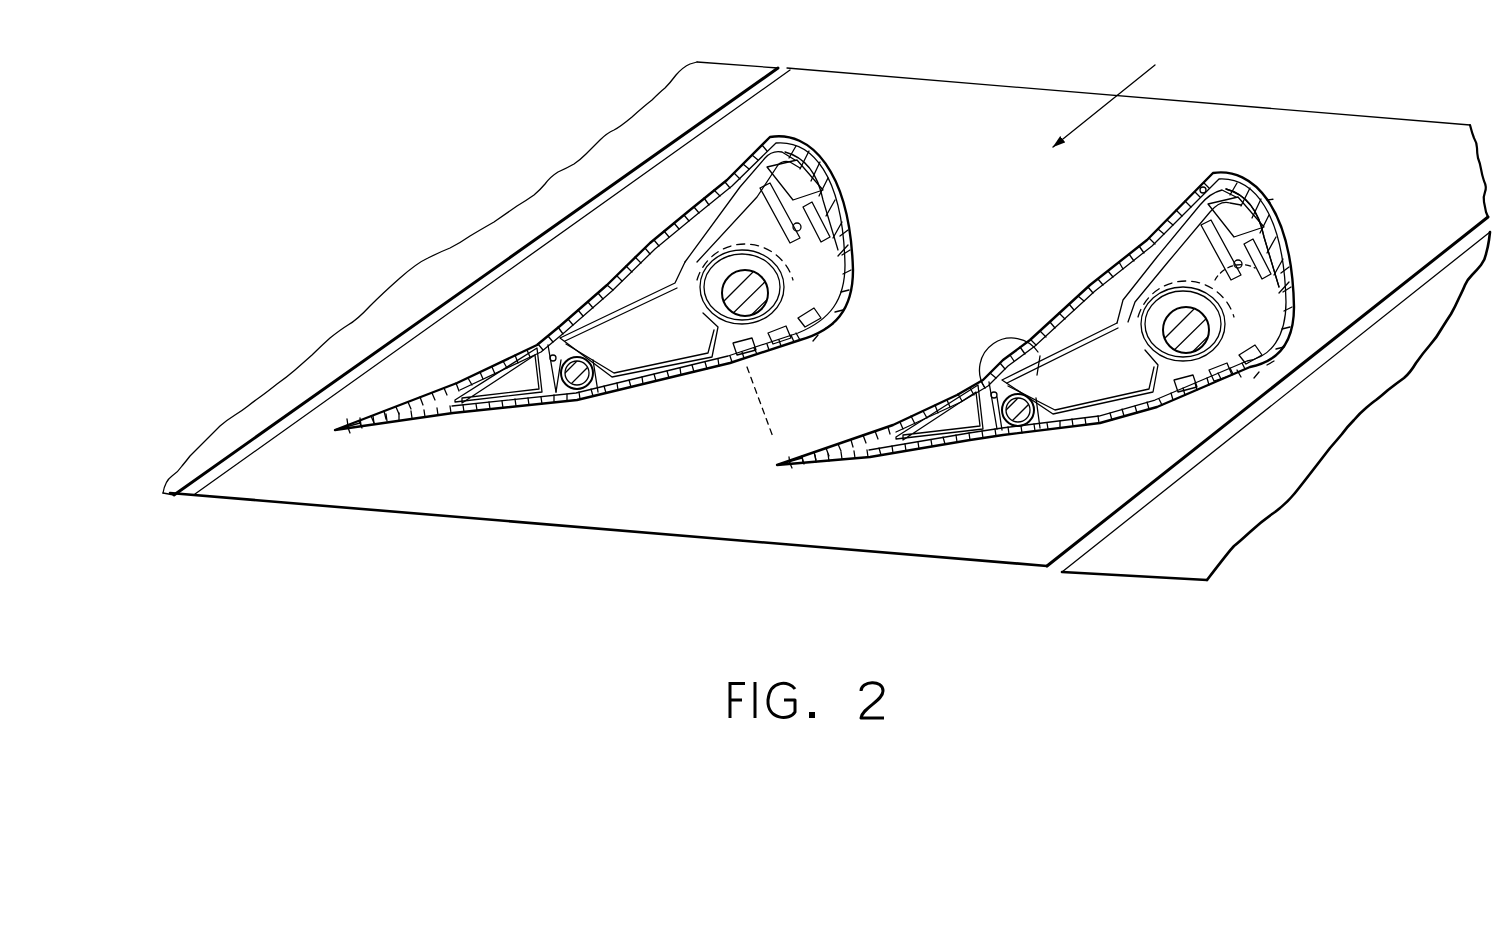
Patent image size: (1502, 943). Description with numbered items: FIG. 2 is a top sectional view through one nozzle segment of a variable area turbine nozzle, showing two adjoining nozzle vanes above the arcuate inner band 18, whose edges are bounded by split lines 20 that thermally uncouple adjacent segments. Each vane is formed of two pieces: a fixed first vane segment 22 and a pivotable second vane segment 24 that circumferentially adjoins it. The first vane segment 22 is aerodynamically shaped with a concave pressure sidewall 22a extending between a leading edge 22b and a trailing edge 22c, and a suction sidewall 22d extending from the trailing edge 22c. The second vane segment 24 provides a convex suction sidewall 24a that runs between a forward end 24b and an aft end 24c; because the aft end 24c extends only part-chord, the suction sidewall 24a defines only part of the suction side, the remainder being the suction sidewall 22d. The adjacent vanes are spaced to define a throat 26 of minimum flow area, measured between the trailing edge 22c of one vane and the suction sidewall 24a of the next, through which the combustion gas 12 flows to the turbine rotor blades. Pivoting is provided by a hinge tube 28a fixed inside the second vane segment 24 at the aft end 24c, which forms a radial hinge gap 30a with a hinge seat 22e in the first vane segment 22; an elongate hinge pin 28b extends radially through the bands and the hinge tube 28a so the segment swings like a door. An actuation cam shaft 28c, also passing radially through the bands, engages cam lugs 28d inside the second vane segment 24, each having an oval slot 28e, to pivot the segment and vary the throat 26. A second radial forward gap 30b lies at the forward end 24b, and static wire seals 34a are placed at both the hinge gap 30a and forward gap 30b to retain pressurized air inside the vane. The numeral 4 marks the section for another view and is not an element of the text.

The combustion gas 12 is at (1140, 77).
The inner band 18 is at (727, 63).
The split lines 20 is at (178, 494).
The first vane segment 22 is at (598, 277).
The pressure sidewall 22a is at (545, 352).
The leading edge 22b is at (793, 140).
The trailing edge 22c is at (337, 430).
The suction sidewall 22d is at (478, 418).
The hinge seat 22e is at (957, 413).
The second vane segment 24 is at (824, 332).
The suction sidewall 24a is at (657, 387).
The forward end 24b is at (1283, 267).
The aft end 24c is at (1000, 440).
The throat 26 is at (773, 437).
The hinge tube 28a is at (1037, 352).
The hinge pin 28b is at (1036, 406).
The actuation cam shaft 28c is at (777, 260).
The cam lug 28d is at (697, 330).
The oval slot 28e is at (1220, 305).
The hinge gap 30a is at (558, 400).
The forward gap 30b is at (1200, 187).
The wire seal 34a is at (982, 378).
The section line 4 is at (1267, 200).